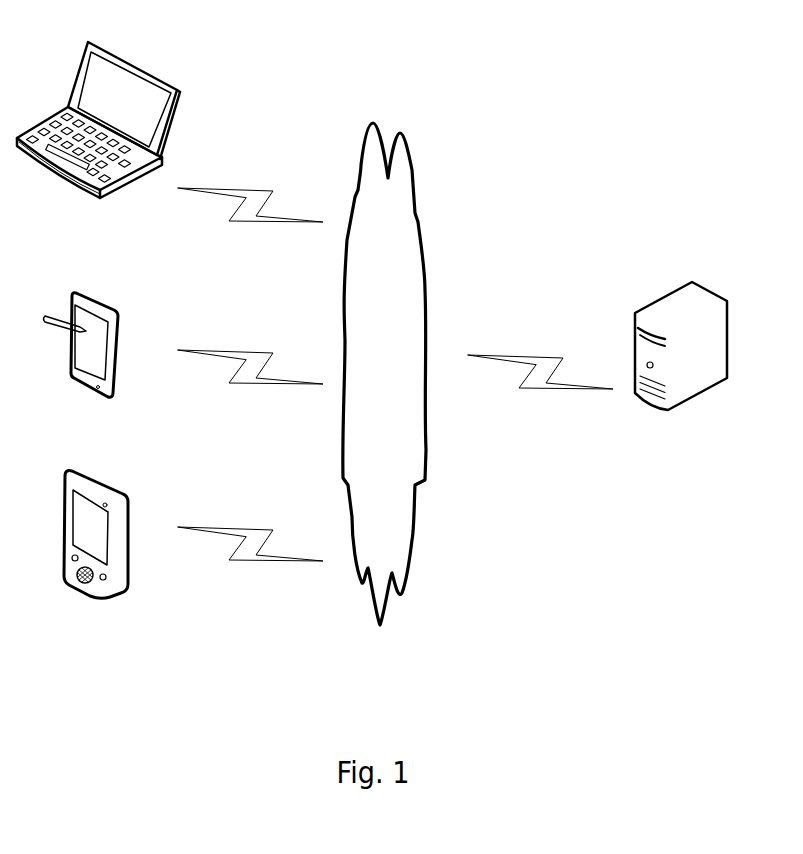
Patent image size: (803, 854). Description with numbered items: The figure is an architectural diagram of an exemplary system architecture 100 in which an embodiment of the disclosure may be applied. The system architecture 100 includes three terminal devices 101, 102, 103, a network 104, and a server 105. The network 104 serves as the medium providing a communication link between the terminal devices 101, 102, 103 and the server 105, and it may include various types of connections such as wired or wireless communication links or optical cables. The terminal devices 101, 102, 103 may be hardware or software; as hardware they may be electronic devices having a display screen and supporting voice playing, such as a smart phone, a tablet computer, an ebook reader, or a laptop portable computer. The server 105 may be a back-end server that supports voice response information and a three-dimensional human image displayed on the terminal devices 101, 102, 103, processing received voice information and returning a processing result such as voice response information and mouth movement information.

The system architecture 100 is at (636, 29).
The terminal device 101 is at (96, 553).
The terminal device 102 is at (81, 364).
The terminal device 103 is at (98, 140).
The network 104 is at (384, 374).
The server 105 is at (681, 369).